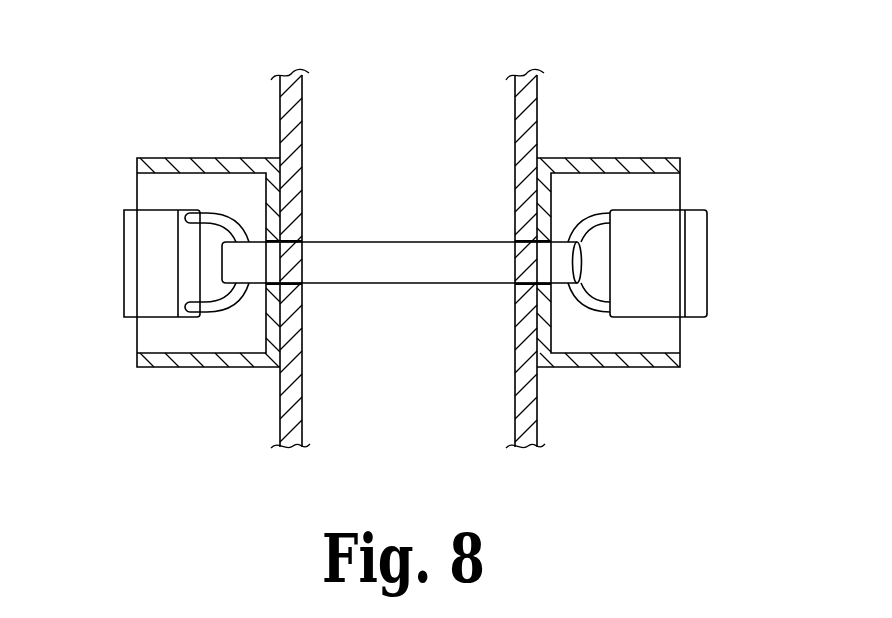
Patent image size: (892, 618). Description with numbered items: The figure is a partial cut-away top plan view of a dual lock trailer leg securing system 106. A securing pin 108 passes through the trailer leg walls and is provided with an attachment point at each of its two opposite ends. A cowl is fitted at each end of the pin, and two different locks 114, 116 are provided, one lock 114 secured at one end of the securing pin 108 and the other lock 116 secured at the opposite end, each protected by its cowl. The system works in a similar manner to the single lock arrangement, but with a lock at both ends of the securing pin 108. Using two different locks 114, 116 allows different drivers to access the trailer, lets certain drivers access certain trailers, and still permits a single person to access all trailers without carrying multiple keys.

The mounting assembly 106 is at (728, 124).
The securing pin 108 is at (368, 242).
The lock 114 is at (707, 262).
The lock 116 is at (124, 262).